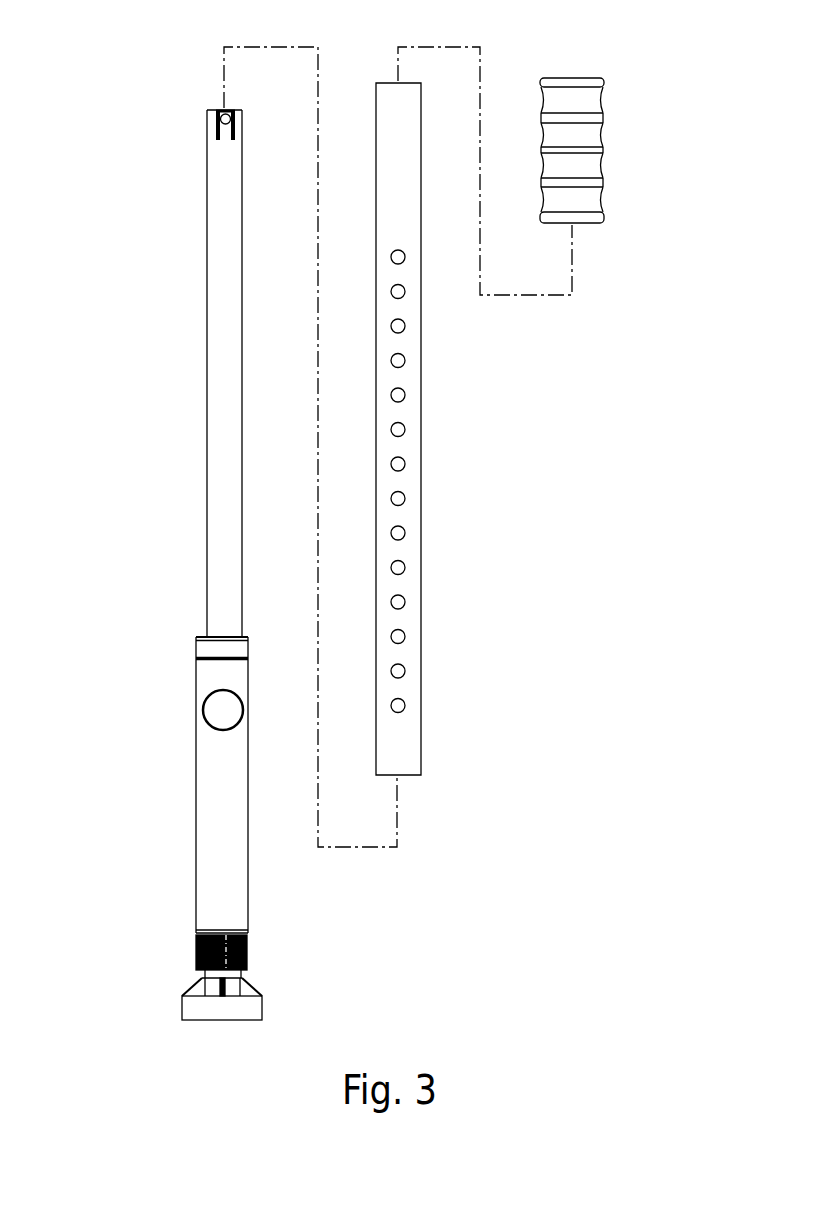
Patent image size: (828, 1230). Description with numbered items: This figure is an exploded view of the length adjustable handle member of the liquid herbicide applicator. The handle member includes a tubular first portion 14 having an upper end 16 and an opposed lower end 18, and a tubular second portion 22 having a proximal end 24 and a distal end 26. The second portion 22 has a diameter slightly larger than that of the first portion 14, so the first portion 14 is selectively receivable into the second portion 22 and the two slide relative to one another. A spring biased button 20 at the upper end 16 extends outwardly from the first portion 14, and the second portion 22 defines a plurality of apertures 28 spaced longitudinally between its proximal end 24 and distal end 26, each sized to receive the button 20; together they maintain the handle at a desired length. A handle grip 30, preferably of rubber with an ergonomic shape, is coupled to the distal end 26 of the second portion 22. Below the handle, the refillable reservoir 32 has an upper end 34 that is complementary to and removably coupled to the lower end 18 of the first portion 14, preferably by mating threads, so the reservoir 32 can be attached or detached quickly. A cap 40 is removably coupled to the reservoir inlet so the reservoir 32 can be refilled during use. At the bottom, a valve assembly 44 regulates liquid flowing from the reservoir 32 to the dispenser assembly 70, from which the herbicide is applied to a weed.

The first portion 14 is at (223, 380).
The upper end 16 is at (216, 111).
The lower end 18 is at (222, 625).
The spring biased button 20 is at (222, 125).
The second portion 22 is at (411, 446).
The proximal end 24 is at (405, 762).
The distal end 26 is at (398, 95).
The apertures 28 is at (404, 362).
The handle grip 30 is at (572, 135).
The reservoir 32 is at (166, 829).
The upper end 34 is at (196, 659).
The cap 40 is at (218, 712).
The valve assembly 44 is at (278, 952).
The dispenser assembly 70 is at (283, 1009).